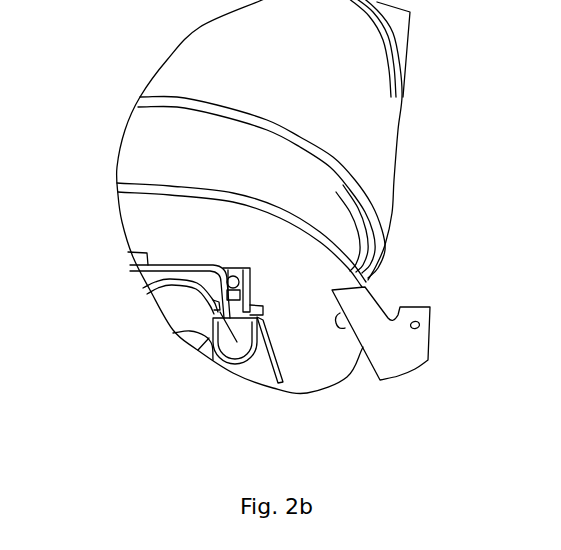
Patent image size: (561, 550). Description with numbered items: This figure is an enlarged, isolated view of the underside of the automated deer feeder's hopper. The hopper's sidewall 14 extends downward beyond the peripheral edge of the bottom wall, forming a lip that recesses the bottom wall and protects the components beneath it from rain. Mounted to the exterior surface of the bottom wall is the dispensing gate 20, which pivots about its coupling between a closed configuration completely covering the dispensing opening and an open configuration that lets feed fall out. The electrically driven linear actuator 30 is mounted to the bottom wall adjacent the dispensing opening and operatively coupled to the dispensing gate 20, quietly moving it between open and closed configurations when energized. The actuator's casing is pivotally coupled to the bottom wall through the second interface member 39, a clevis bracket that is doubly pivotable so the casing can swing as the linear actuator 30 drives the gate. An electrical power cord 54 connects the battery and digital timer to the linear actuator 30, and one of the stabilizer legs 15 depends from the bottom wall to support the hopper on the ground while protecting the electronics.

The sidewall 14 is at (382, 130).
The stabilizer legs 15 is at (407, 350).
The dispensing gate 20 is at (183, 305).
The linear actuator 30 is at (248, 396).
The second interface member 39 is at (248, 288).
The electrical power cord 54 is at (140, 250).